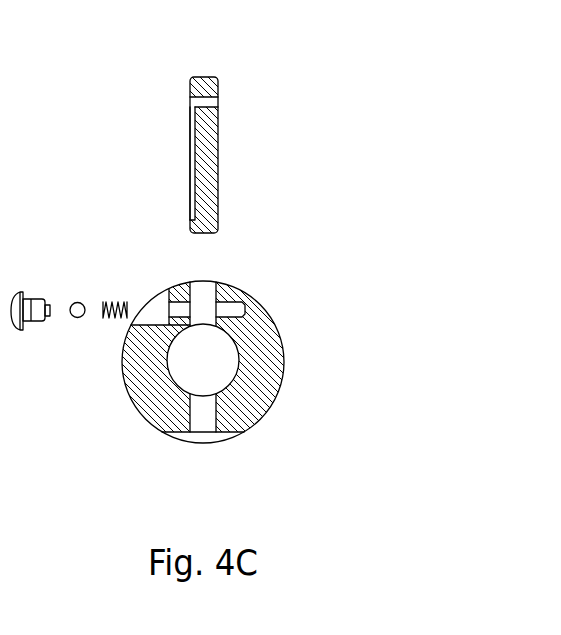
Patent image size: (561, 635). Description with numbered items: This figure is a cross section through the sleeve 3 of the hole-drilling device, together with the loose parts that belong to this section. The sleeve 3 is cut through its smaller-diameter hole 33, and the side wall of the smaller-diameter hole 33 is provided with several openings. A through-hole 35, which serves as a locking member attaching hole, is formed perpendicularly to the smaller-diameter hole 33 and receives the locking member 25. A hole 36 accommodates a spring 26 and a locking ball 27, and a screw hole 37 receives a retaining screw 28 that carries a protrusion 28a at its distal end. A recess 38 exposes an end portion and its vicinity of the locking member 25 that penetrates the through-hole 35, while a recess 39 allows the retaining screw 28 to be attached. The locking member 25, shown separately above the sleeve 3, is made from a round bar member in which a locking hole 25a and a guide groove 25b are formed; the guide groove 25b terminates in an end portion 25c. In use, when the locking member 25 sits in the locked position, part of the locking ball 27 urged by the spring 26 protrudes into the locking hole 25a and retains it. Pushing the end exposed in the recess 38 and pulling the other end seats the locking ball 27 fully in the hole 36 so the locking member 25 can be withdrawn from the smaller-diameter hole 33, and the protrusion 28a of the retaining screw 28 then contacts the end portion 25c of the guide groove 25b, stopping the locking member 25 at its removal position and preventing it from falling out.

The sleeve 3 is at (285, 358).
The locking member 25 is at (207, 77).
The locking hole 25a is at (212, 102).
The guide groove 25b is at (190, 133).
The end portion of the guide groove 25c is at (190, 217).
The spring 26 is at (113, 302).
The locking ball 27 is at (77, 302).
The retaining screw 28 is at (13, 292).
The protrusion 28a is at (50, 312).
The smaller-diameter hole 33 is at (178, 379).
The through-hole 35 is at (214, 298).
The hole 36 is at (236, 304).
The screw hole 37 is at (184, 303).
The recess 38 is at (226, 435).
The recess 39 is at (135, 322).